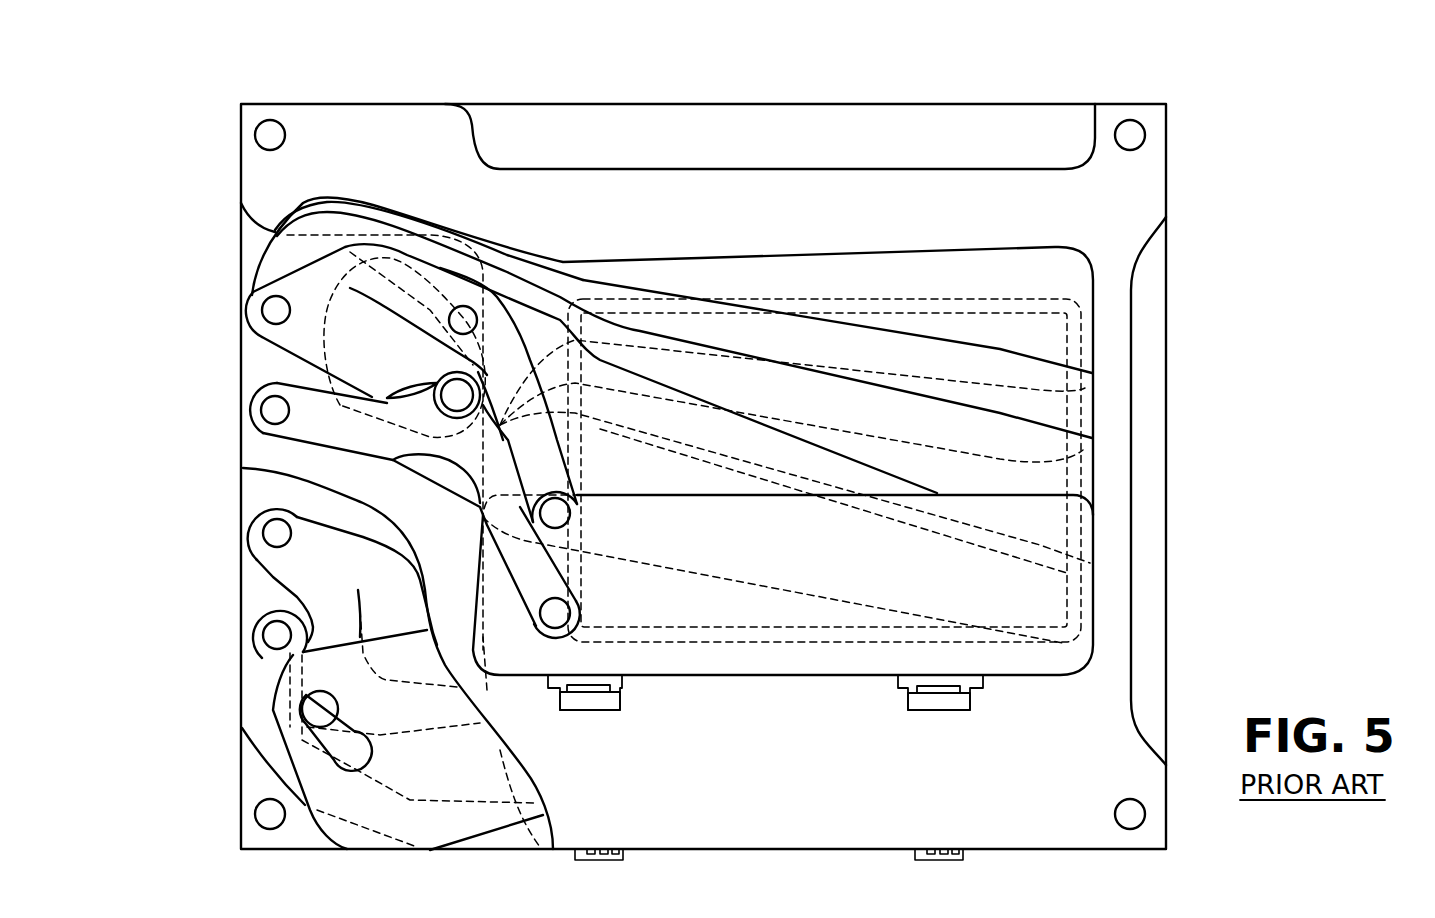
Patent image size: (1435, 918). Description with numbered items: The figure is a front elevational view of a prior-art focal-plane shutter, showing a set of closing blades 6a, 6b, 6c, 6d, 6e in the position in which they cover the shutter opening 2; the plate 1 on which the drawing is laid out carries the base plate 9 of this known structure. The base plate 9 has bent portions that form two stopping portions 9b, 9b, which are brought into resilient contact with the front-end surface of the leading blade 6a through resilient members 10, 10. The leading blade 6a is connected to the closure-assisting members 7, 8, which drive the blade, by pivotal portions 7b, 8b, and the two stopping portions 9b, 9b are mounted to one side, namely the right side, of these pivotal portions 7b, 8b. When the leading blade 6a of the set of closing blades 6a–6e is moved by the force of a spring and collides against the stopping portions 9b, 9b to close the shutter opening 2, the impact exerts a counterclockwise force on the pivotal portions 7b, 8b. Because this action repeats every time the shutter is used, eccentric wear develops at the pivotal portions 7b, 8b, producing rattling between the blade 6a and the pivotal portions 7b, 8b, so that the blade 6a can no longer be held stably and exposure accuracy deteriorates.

The base plate 1 is at (556, 128).
The shutter opening 2 is at (718, 437).
The leading blade 6a is at (838, 576).
The closing blade 6b is at (847, 477).
The closing blade 6c is at (1048, 447).
The closing blade 6d is at (1042, 374).
The closing blade 6e is at (1017, 278).
The closure-assisting member 7 is at (290, 432).
The pivotal portion 7b is at (570, 614).
The closure-assisting member 8 is at (300, 290).
The pivotal portion 8b is at (570, 516).
The base plate 9 is at (953, 212).
The stopping portion 9b is at (603, 710).
The resilient member 10 is at (640, 677).